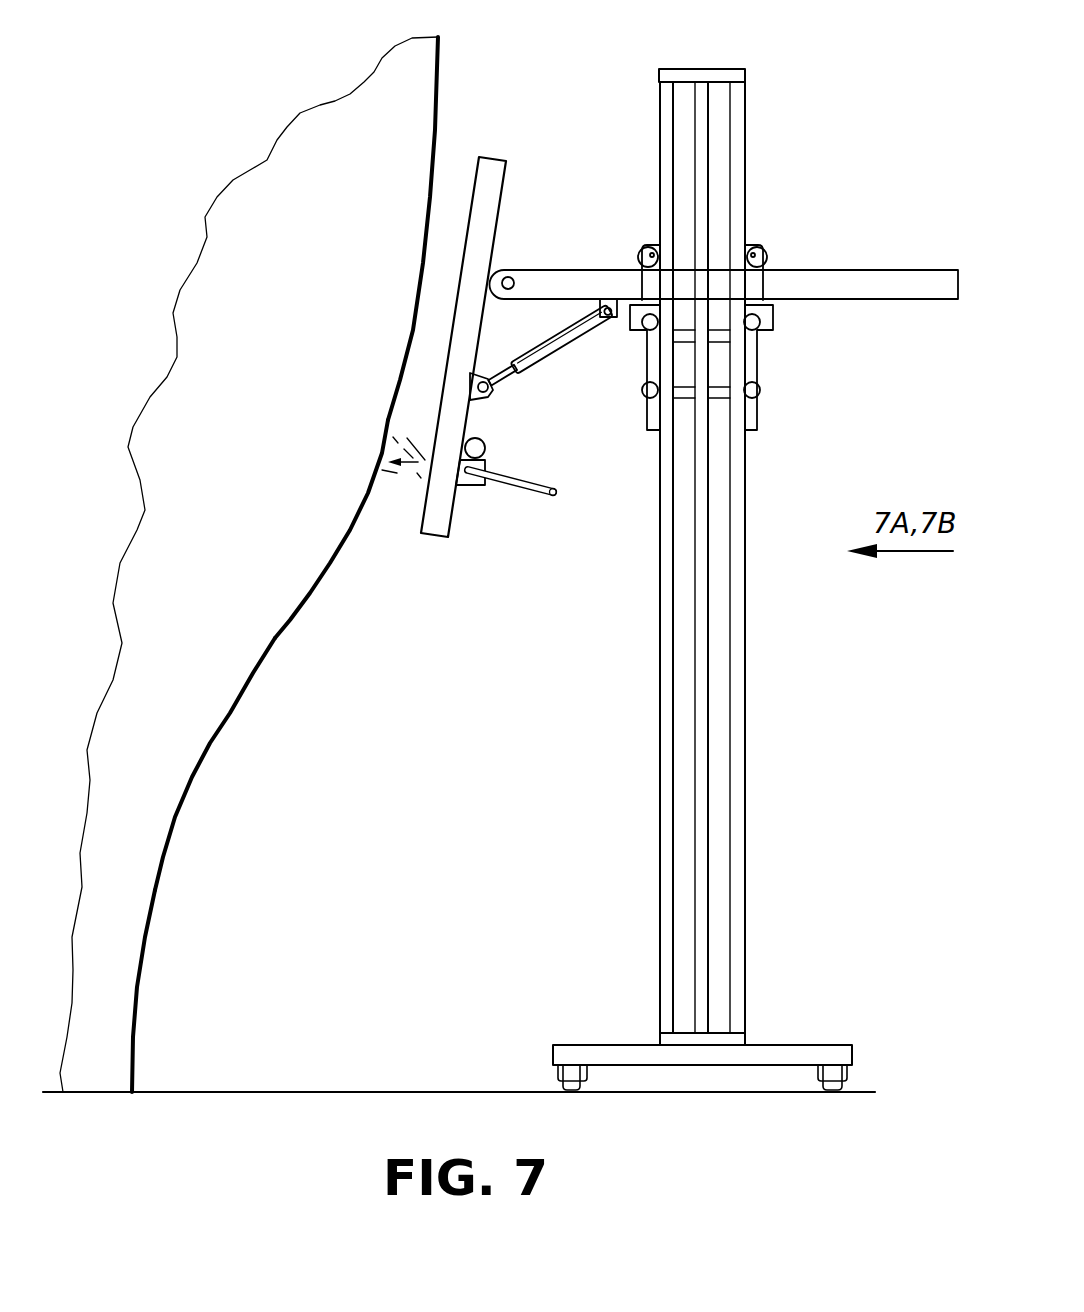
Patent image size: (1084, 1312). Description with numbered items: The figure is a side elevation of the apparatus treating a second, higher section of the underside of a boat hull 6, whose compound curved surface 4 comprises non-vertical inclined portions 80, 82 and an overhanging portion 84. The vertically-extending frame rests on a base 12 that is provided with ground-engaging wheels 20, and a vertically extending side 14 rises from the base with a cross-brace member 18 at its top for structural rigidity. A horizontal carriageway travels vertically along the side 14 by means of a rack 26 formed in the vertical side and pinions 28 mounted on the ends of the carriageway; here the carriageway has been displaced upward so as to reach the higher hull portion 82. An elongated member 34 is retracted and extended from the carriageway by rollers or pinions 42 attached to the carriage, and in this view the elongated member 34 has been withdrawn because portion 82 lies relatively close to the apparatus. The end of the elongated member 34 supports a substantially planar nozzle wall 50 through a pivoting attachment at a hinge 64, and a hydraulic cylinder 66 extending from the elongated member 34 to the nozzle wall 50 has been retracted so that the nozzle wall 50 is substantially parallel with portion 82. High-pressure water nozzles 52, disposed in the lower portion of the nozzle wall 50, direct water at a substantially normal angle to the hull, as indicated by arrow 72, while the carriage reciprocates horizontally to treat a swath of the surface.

The compound curved surface 4 is at (192, 775).
The boat hull 6 is at (203, 345).
The base 12 is at (780, 1045).
The vertically extending side 14 is at (708, 658).
The cross-brace member 18 is at (682, 68).
The ground-engaging wheels 20 is at (830, 1093).
The rack 26 is at (660, 725).
The pinions 28 is at (646, 330).
The elongated member 34 is at (855, 283).
The rollers or pinions 42 is at (652, 242).
The nozzle wall 50 is at (507, 173).
The high-pressure water nozzles 52 is at (471, 506).
The hinge 64 is at (512, 280).
The hydraulic cylinder 66 is at (538, 368).
The arrow 72 is at (410, 467).
The non-vertical inclined portion 80 is at (148, 937).
The non-vertical inclined portion 82 is at (387, 420).
The overhanging portion 84 is at (277, 632).